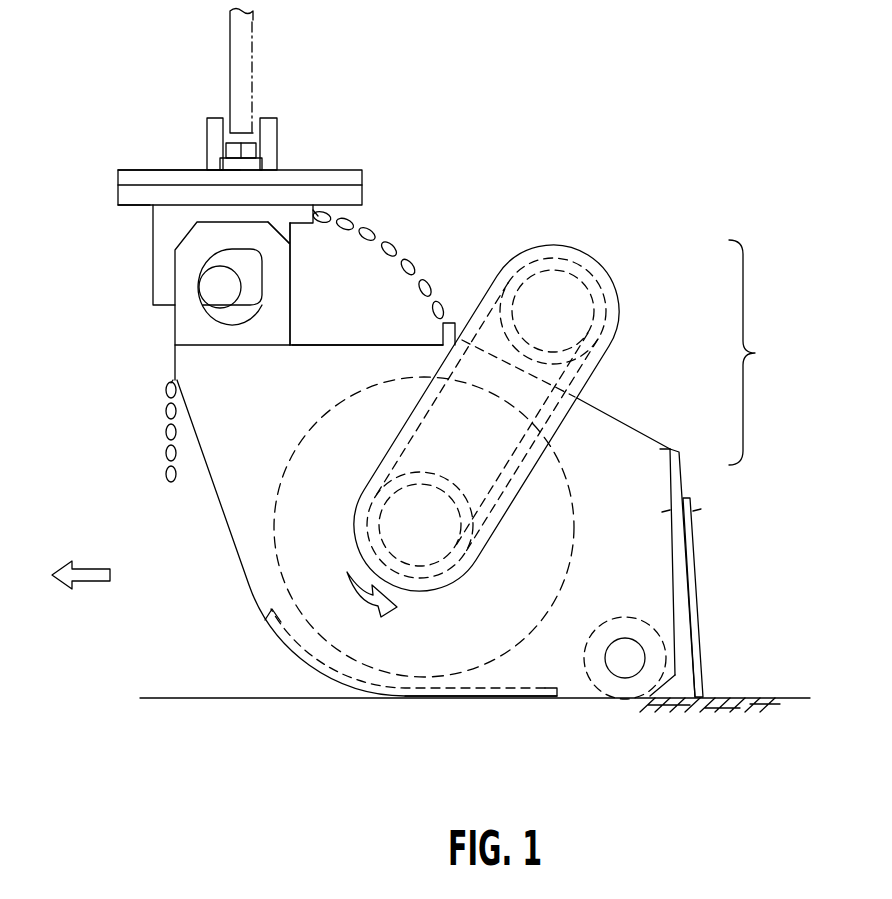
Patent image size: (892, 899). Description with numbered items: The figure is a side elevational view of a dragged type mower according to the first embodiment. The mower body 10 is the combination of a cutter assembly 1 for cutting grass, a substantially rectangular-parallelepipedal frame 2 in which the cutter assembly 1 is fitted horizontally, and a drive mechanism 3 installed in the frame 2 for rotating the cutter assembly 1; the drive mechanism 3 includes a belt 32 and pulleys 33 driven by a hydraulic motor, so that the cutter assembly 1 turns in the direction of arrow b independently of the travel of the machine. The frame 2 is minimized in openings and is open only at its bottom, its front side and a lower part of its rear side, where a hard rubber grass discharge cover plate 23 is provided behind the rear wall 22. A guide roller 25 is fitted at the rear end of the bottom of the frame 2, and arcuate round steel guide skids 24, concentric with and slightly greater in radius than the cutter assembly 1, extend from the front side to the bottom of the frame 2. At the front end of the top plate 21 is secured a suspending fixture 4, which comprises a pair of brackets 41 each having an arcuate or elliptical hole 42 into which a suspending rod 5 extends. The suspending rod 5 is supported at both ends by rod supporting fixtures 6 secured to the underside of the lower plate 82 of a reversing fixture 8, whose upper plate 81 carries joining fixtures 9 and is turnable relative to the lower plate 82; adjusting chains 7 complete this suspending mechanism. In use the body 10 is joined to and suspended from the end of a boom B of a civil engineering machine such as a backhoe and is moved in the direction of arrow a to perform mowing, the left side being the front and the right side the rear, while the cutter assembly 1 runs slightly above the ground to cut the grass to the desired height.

The cutter assembly 1 is at (593, 486).
The frame 2 is at (612, 430).
The drive mechanism 3 is at (628, 266).
The suspending fixture 4 is at (158, 333).
The suspending rod 5 is at (210, 292).
The rod supporting fixtures 6 is at (165, 250).
The adjusting chains 7 is at (393, 242).
The reversing fixture 8 is at (342, 160).
The joining fixtures 9 is at (278, 143).
The body 10 is at (760, 352).
The top plate 21 is at (333, 345).
The rear plate 22 is at (658, 567).
The grass discharge cover plate 23 is at (703, 637).
The guide skids 24 is at (476, 700).
The guide roller 25 is at (622, 688).
The belt 32 is at (425, 402).
The pulleys 33 is at (440, 588).
The brackets 41 is at (278, 323).
The hole 42 is at (252, 283).
The upper plate 81 is at (162, 168).
The lower plate 82 is at (132, 208).
The boom B is at (255, 82).
The arrow a is at (81, 588).
The arrow b is at (365, 597).